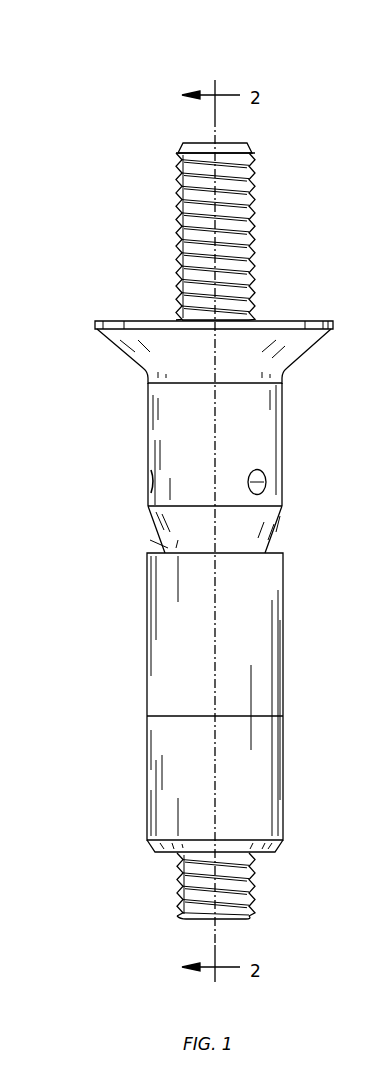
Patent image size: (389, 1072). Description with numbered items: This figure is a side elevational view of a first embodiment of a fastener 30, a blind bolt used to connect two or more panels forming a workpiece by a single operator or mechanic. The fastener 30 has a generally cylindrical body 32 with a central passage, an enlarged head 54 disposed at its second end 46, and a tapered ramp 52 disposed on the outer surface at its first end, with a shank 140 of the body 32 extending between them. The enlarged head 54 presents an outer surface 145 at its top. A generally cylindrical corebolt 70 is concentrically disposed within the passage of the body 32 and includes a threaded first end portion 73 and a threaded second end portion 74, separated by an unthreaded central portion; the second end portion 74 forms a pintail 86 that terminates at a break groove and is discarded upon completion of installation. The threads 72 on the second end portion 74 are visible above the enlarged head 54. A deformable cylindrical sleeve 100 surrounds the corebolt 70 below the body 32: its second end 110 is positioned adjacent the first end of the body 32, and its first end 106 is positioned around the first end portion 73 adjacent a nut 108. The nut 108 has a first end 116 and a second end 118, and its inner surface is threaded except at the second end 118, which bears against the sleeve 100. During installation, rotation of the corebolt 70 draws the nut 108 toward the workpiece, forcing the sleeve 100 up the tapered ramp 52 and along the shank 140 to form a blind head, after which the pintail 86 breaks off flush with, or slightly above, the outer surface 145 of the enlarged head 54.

The fastener 30 is at (118, 118).
The second end portion 74 is at (248, 151).
The corebolt 70 is at (256, 200).
The pintail 86 is at (178, 218).
The external threads 72 is at (256, 243).
The second end 46 is at (280, 321).
The outer surface 145 is at (121, 321).
The enlarged head 54 is at (116, 345).
The body 32 is at (273, 442).
The shank 140 is at (153, 442).
The tapered ramp 52 is at (269, 514).
The sleeve 100 is at (273, 612).
The second end 110 is at (148, 562).
The first end 106 is at (149, 698).
The second end 118 is at (282, 733).
The nut 108 is at (153, 772).
The first end 116 is at (273, 832).
The first end portion 73 is at (256, 908).